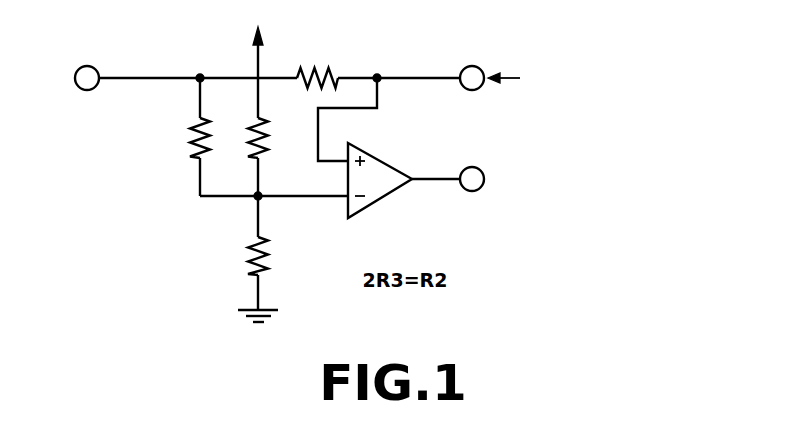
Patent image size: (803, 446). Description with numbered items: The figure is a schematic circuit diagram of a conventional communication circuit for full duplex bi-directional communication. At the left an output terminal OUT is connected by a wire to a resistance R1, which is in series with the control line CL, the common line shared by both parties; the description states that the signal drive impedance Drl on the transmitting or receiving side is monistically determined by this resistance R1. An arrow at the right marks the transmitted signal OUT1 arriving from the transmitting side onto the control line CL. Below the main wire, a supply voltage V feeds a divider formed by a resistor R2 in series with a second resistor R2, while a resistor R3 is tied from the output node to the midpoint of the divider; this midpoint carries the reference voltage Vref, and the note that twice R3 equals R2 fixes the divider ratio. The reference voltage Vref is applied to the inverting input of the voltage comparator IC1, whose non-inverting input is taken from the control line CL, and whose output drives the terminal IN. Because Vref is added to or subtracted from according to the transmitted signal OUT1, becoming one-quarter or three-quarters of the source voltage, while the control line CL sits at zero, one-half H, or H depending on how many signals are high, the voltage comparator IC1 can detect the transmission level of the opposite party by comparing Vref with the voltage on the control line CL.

The resistance R1 is at (317, 65).
The resistor R2 is at (277, 196).
The resistor R3 is at (181, 138).
The voltage comparator IC1 is at (386, 168).
The control line CL is at (417, 76).
The signal drive impedance Drl is at (337, 68).
The supply voltage V is at (258, 25).
The reference voltage Vref is at (290, 213).
The output terminal OUT is at (87, 65).
The input terminal IN is at (472, 194).
The transmitted signal OUT1 is at (615, 80).